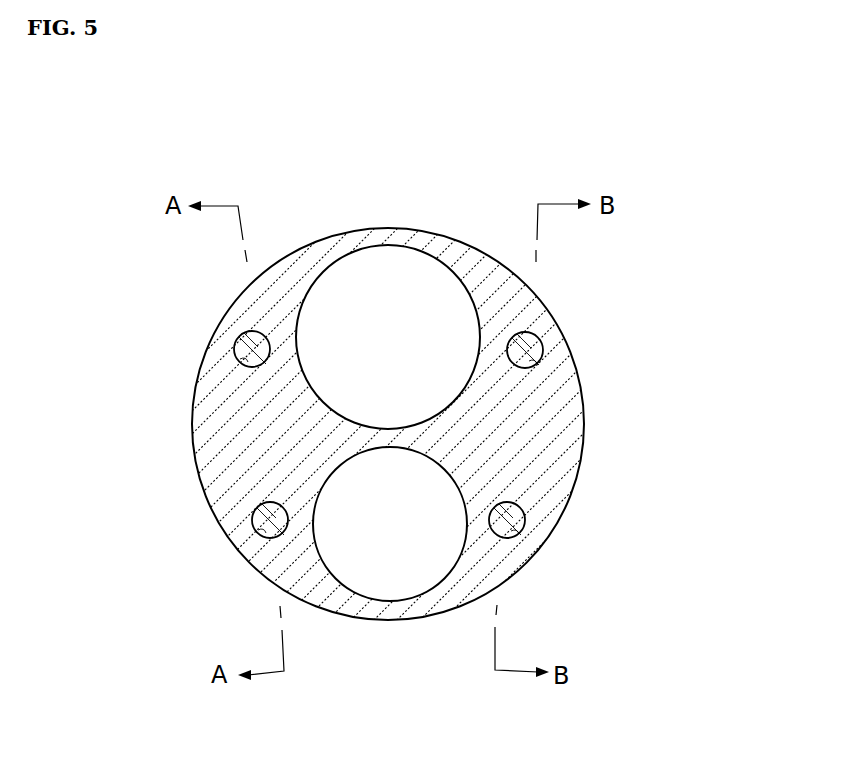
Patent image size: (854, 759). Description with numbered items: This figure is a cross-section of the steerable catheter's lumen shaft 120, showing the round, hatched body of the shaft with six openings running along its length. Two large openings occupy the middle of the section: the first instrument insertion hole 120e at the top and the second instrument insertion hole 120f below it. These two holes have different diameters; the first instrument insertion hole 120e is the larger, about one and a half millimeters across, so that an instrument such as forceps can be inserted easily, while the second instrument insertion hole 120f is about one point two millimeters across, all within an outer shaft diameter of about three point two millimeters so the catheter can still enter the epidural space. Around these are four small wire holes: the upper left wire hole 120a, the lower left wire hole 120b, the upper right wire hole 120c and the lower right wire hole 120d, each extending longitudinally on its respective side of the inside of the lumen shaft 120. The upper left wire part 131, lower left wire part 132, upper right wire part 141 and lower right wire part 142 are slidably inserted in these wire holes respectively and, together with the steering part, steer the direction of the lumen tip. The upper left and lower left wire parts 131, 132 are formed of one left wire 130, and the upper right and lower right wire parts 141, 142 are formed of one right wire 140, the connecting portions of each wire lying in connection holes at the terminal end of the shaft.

The lumen shaft 120 is at (450, 226).
The upper left wire hole 120a is at (240, 360).
The lower left wire hole 120b is at (252, 520).
The upper right wire hole 120c is at (536, 363).
The lower right wire hole 120d is at (517, 513).
The first instrument insertion hole 120e is at (366, 300).
The second instrument insertion hole 120f is at (396, 547).
The left wire 130 is at (153, 330).
The upper left wire part 131 is at (240, 337).
The lower left wire part 132 is at (260, 537).
The right wire 140 is at (627, 330).
The upper right wire part 141 is at (537, 338).
The lower right wire part 142 is at (518, 530).